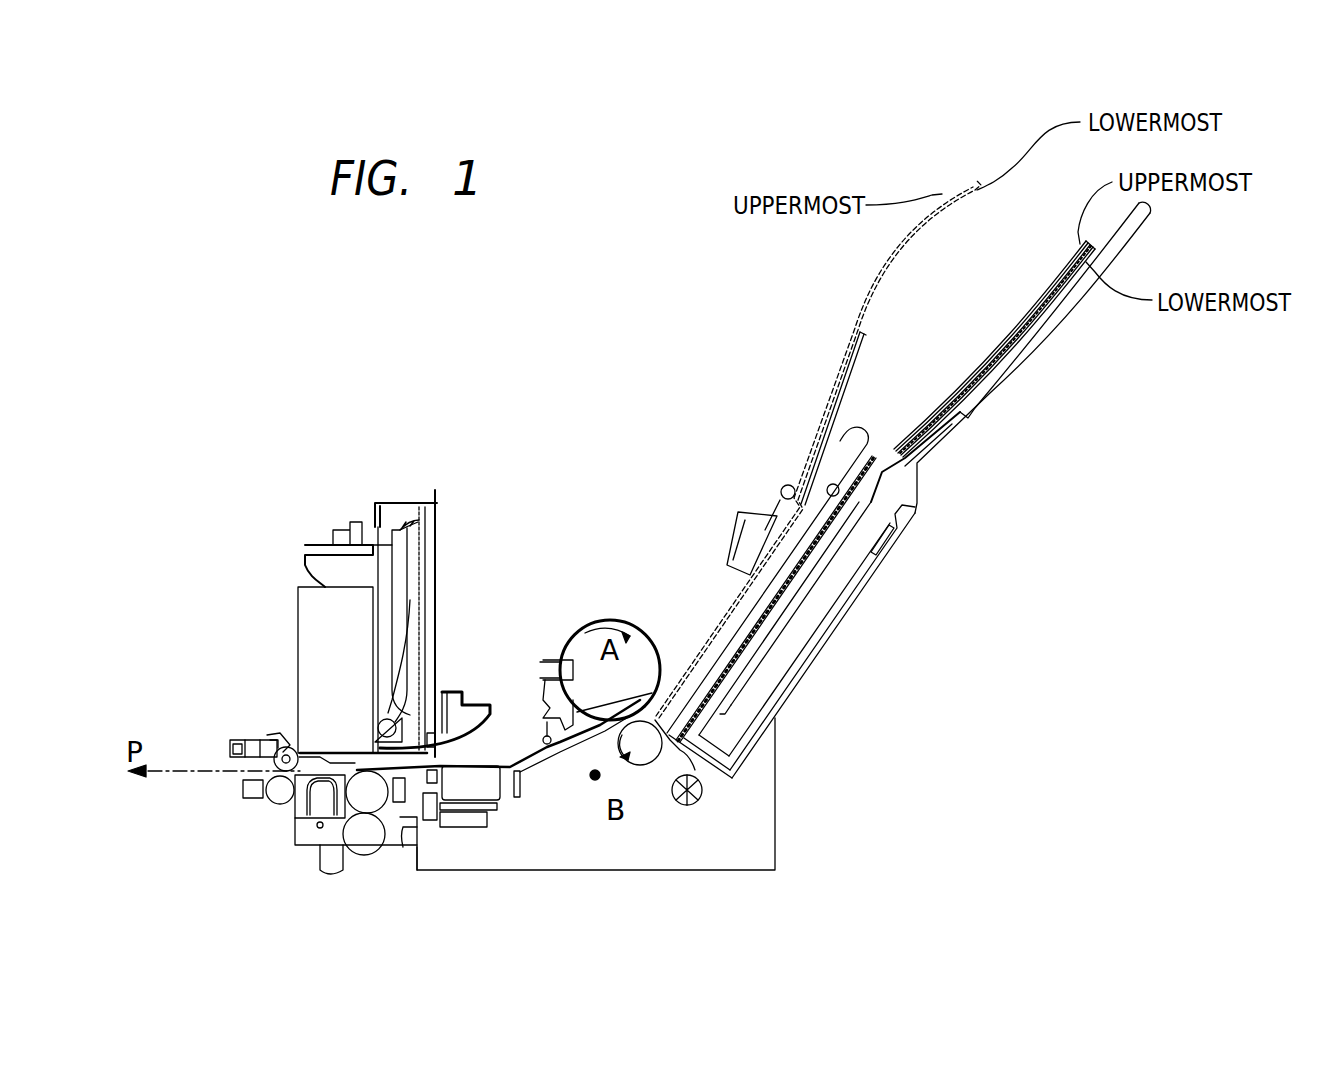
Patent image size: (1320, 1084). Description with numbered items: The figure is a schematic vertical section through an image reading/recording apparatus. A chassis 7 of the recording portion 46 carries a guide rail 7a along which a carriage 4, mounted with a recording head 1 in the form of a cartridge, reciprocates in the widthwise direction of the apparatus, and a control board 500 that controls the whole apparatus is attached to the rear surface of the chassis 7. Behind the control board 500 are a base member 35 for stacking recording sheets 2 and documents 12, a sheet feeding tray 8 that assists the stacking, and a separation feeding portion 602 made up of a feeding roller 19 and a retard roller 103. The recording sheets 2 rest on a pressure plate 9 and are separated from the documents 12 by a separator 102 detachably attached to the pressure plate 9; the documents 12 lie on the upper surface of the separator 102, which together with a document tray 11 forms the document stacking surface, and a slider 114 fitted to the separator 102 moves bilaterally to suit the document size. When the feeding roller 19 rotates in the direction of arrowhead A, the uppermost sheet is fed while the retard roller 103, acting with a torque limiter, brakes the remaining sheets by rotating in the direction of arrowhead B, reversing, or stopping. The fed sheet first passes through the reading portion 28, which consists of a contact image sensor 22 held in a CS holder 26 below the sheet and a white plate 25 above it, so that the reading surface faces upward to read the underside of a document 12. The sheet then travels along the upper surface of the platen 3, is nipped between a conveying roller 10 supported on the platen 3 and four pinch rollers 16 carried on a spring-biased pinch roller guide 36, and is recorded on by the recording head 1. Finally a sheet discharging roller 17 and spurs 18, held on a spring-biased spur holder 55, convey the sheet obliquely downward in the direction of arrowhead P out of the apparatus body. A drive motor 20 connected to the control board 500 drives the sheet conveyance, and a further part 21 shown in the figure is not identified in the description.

The recording head 1 is at (330, 625).
The recording sheets 2 is at (1047, 290).
The platen 3 is at (318, 851).
The carriage 4 is at (340, 577).
The chassis 7 is at (423, 547).
The guide rail 7a is at (375, 520).
The sheet feeding tray 8 is at (1005, 386).
The pressure plate 9 is at (762, 647).
The conveying roller 10 is at (402, 860).
The document tray 11 is at (850, 393).
The documents 12 is at (860, 313).
The pinch rollers 16 is at (350, 742).
The sheet discharging roller 17 is at (278, 806).
The spur 18 is at (280, 745).
The feeding roller 19 is at (580, 650).
The drive motor 20 is at (366, 843).
The sensor 21 is at (520, 788).
The contact image sensor 22 is at (500, 795).
The white plate 25 is at (497, 765).
The CS holder 26 is at (500, 810).
The reading portion 28 is at (457, 827).
The base member 35 is at (838, 600).
The pinch roller guide 36 is at (410, 600).
The recording portion 46 is at (290, 748).
The spur holder 55 is at (250, 745).
The separator 102 is at (760, 548).
The retard roller 103 is at (640, 766).
The slider 114 is at (740, 530).
The control board 500 is at (435, 490).
The separation feeding portion 602 is at (650, 618).